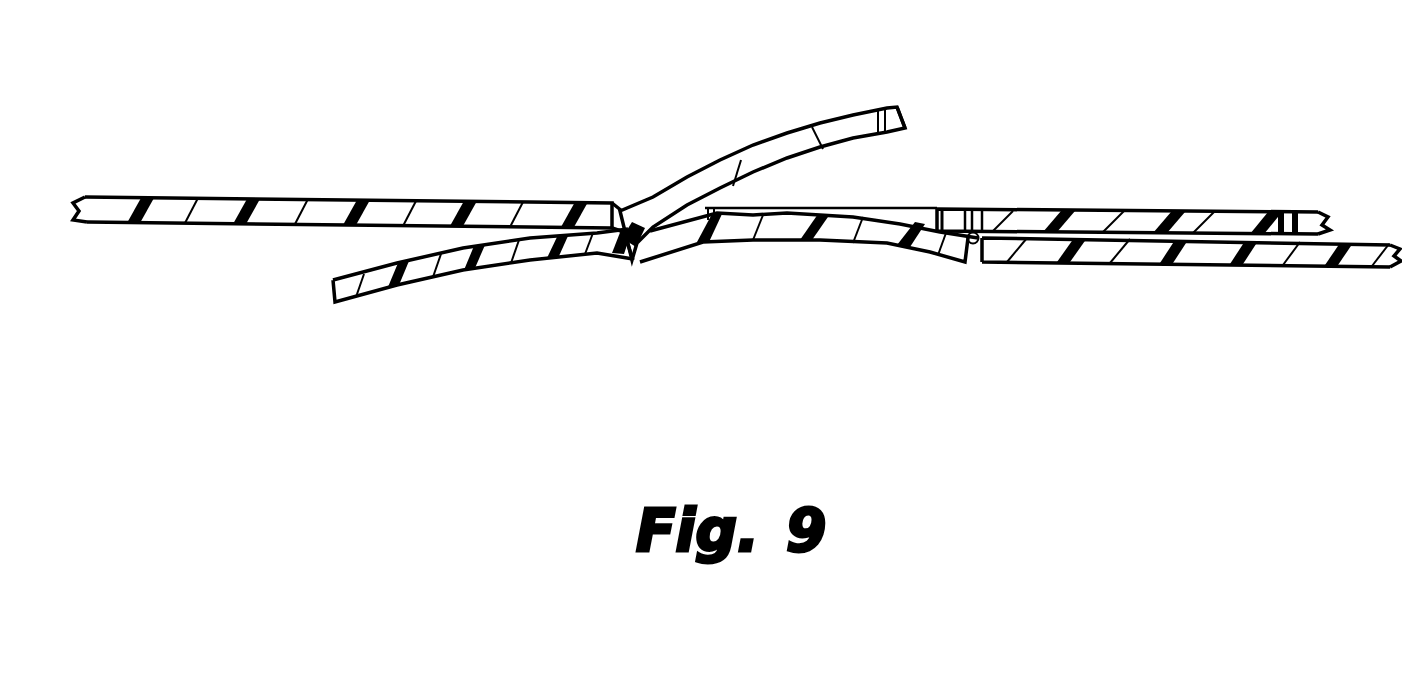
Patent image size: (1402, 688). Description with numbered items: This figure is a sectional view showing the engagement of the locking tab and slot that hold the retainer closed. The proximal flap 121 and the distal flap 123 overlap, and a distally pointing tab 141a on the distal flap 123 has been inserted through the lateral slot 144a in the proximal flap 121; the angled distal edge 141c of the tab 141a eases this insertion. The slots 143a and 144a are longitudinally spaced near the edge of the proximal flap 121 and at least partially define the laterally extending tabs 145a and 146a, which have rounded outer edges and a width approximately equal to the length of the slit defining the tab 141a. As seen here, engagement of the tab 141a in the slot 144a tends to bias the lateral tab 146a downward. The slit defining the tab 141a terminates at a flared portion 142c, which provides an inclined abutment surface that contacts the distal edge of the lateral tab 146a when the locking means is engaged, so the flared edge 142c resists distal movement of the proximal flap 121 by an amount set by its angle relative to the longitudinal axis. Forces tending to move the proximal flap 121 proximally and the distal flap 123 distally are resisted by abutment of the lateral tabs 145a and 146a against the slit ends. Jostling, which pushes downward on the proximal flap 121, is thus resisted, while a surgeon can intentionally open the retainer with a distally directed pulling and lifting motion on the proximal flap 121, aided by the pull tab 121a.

The proximal flap 121 is at (280, 197).
The pull tab 121a is at (1306, 212).
The distal flap 123 is at (1255, 268).
The tab 141a is at (731, 160).
The distal edge 141c is at (858, 112).
The flared portion 142c is at (973, 246).
The lateral slot 143a is at (978, 209).
The lateral slot 144a is at (626, 194).
The lateral tab 145a is at (1165, 209).
The lateral tab 146a is at (782, 242).